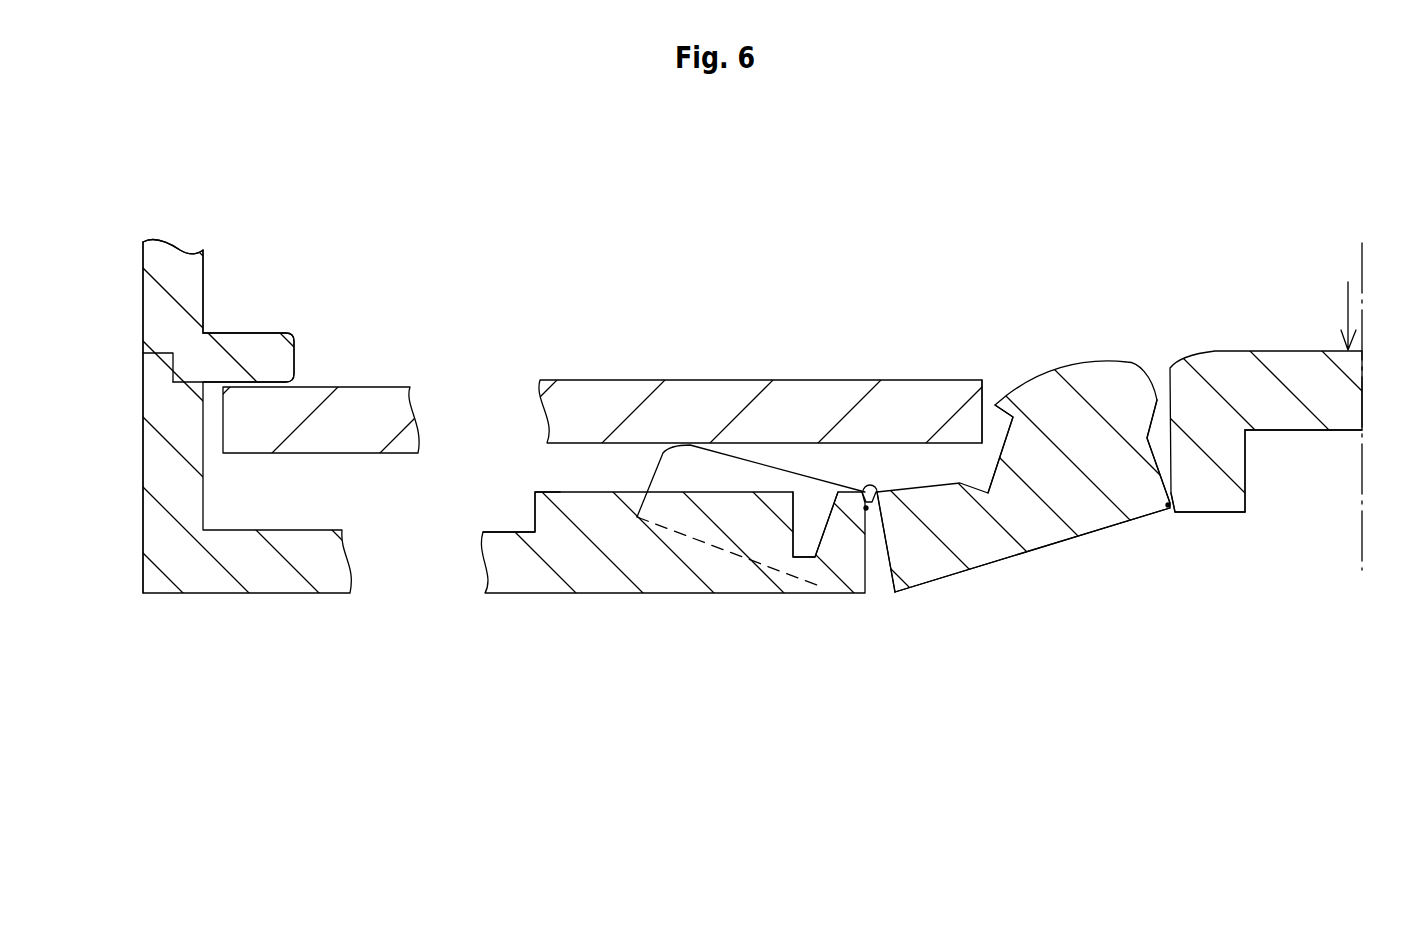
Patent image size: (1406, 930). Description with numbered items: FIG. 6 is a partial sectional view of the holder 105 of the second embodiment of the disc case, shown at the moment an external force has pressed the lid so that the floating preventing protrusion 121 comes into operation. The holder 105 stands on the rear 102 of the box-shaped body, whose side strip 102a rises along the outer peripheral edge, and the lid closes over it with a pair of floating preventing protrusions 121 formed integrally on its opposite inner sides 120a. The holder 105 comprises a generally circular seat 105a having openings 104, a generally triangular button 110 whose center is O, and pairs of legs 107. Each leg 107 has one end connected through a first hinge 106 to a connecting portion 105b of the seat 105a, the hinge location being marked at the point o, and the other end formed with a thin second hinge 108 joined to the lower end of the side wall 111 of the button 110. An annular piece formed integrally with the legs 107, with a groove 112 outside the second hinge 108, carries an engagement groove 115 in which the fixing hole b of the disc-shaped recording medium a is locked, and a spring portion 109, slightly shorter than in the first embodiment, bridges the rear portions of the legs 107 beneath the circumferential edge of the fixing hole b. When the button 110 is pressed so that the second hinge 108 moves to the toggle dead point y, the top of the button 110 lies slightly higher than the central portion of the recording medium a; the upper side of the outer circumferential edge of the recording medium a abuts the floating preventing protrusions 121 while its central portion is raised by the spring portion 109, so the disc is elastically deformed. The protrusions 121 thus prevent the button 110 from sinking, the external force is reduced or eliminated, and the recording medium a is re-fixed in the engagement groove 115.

The rear 102 is at (513, 580).
The housing side wall 102a is at (153, 510).
The inner sides of the lid 120a is at (197, 277).
The floating preventing protrusion 121 is at (270, 342).
The disc-shaped recording medium a is at (375, 395).
The fixing hole b is at (983, 393).
The spring portion 109 is at (682, 477).
The holder 105 is at (1150, 290).
The seat 105a is at (530, 505).
The connecting portion 105b is at (832, 517).
The pivot point o is at (863, 512).
The opening 104 is at (870, 583).
The first hinge 106 is at (893, 494).
The engagement groove 115 is at (993, 463).
The groove 112 is at (1160, 458).
The leg 107 is at (1137, 515).
The toggle dead point y is at (1170, 506).
The second hinge 108 is at (1173, 478).
The button 110 is at (1342, 420).
The side wall 111 is at (1237, 467).
The center of the button O is at (1362, 258).